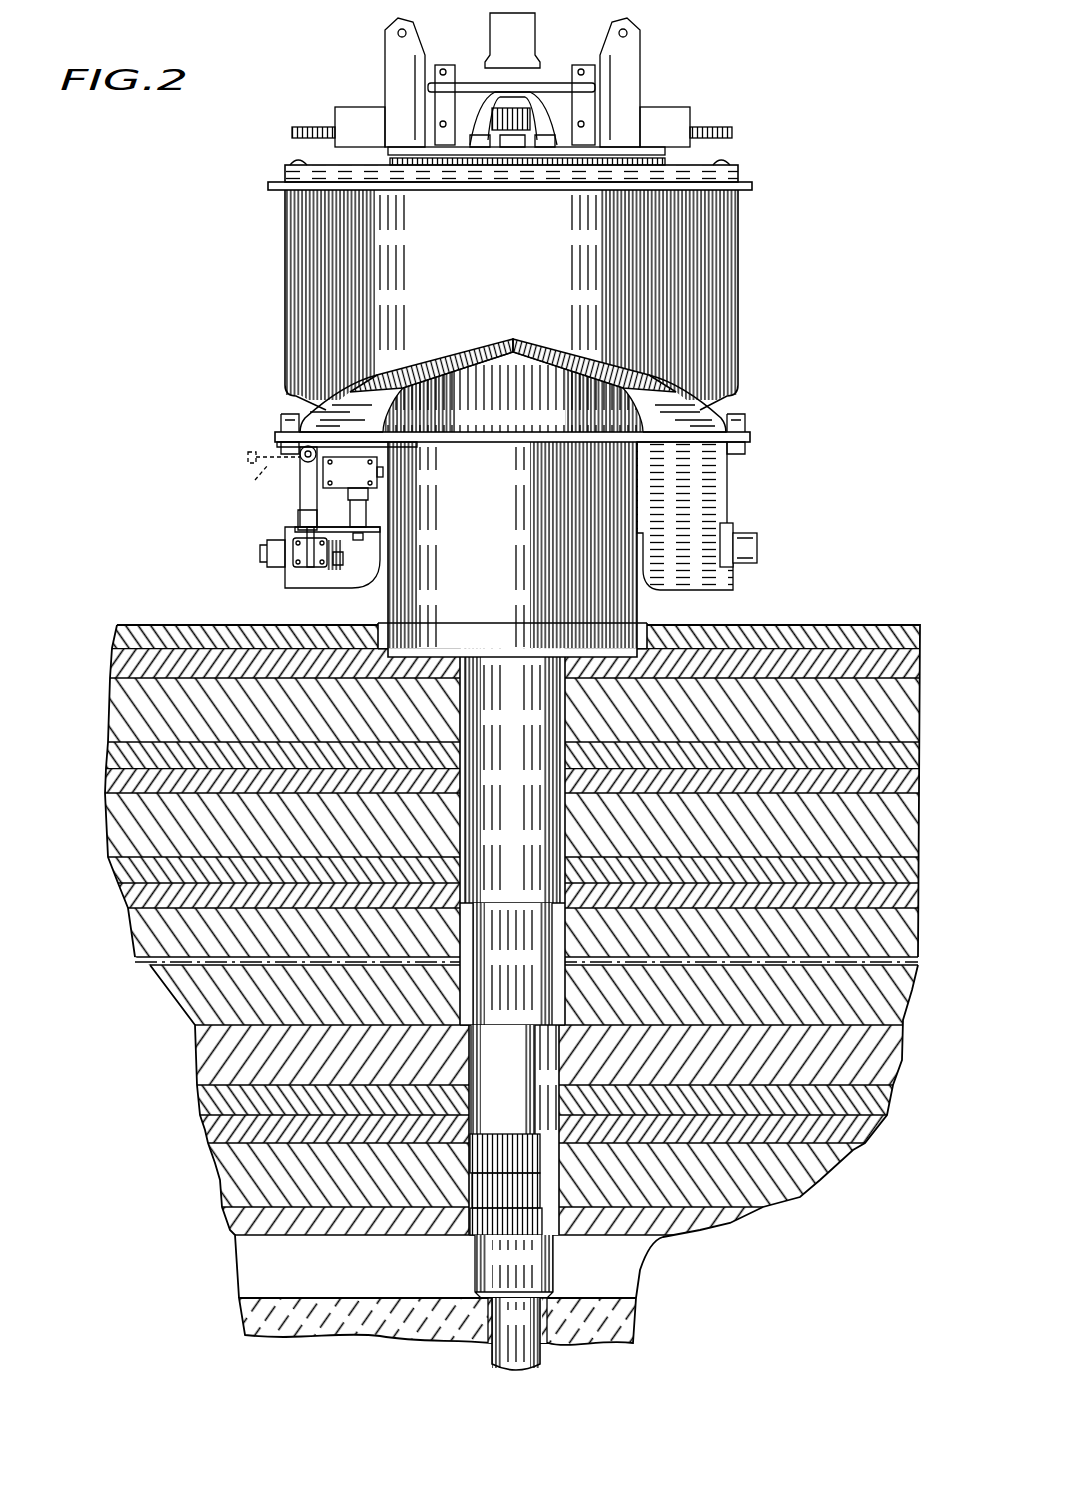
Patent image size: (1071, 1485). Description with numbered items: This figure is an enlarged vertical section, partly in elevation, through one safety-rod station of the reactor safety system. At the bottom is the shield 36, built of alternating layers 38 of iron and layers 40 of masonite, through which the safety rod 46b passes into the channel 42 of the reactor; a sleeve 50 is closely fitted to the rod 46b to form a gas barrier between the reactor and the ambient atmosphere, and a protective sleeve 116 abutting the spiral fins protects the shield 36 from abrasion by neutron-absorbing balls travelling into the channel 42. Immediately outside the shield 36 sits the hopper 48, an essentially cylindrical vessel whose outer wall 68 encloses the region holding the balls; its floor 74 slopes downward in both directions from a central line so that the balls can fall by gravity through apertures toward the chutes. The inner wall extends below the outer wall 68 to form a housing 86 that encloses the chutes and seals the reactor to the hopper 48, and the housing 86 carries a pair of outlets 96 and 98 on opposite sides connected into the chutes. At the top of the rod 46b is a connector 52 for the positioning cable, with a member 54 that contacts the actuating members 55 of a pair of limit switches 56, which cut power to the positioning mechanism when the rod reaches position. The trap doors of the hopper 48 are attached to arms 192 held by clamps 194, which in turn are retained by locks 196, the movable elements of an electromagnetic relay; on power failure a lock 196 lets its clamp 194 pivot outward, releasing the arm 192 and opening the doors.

The shield 36 is at (148, 660).
The layers 38 is at (125, 721).
The layers 40 is at (118, 749).
The channel 42 is at (468, 1330).
The safety rod 46b is at (492, 1314).
The hopper 48 is at (496, 263).
The sleeve 50 is at (580, 1298).
The connector 52 is at (530, 36).
The member 54 is at (470, 60).
The actuating members 55 is at (427, 63).
The limit switches 56 is at (370, 117).
The outer wall 68 is at (718, 321).
The floor 74 is at (394, 379).
The housing 86 is at (490, 561).
The outlet 96 is at (752, 557).
The outlet 98 is at (278, 548).
The protective sleeve 116 is at (518, 830).
The arms 192 is at (305, 488).
The clamps 194 is at (338, 566).
The locks 196 is at (308, 567).